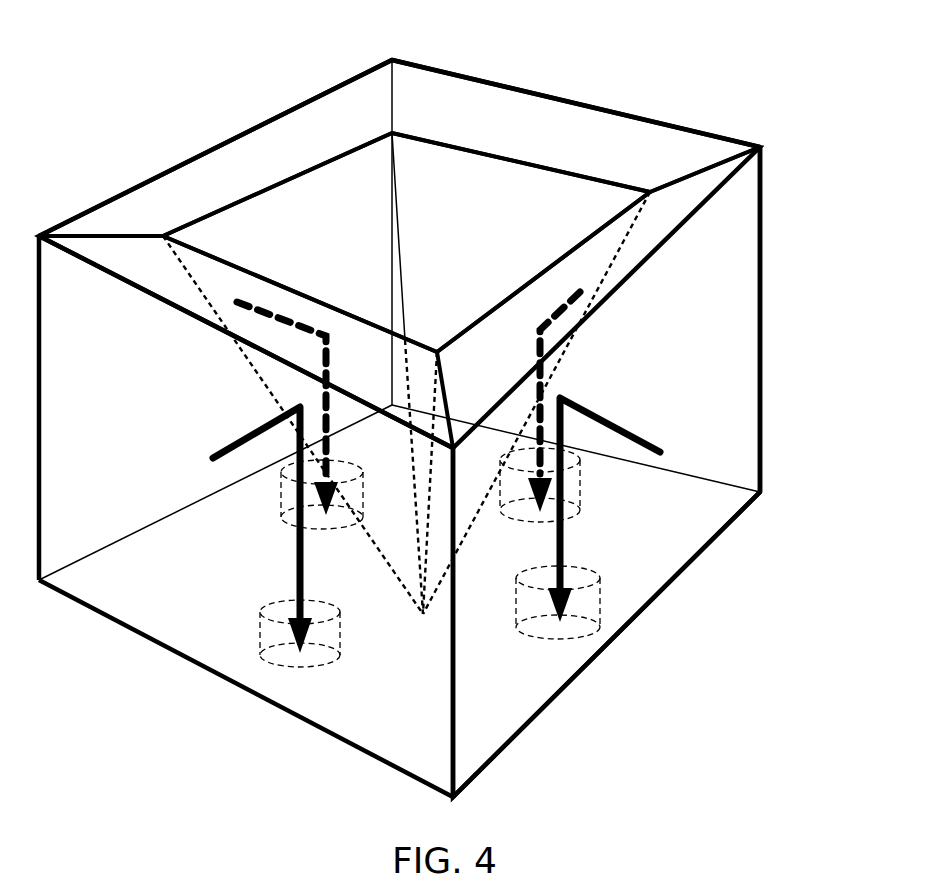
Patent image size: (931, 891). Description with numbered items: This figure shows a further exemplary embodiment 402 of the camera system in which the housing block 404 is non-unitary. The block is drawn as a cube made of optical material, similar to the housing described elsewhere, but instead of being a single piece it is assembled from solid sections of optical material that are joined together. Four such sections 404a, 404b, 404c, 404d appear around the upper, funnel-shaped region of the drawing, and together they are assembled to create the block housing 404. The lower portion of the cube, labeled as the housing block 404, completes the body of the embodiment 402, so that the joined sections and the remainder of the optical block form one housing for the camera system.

The camera system embodiment 402 is at (462, 62).
The housing block 404 is at (568, 688).
The section of optical material 404a is at (687, 198).
The section of optical material 404b is at (583, 145).
The section of optical material 404c is at (292, 118).
The section of optical material 404d is at (213, 278).